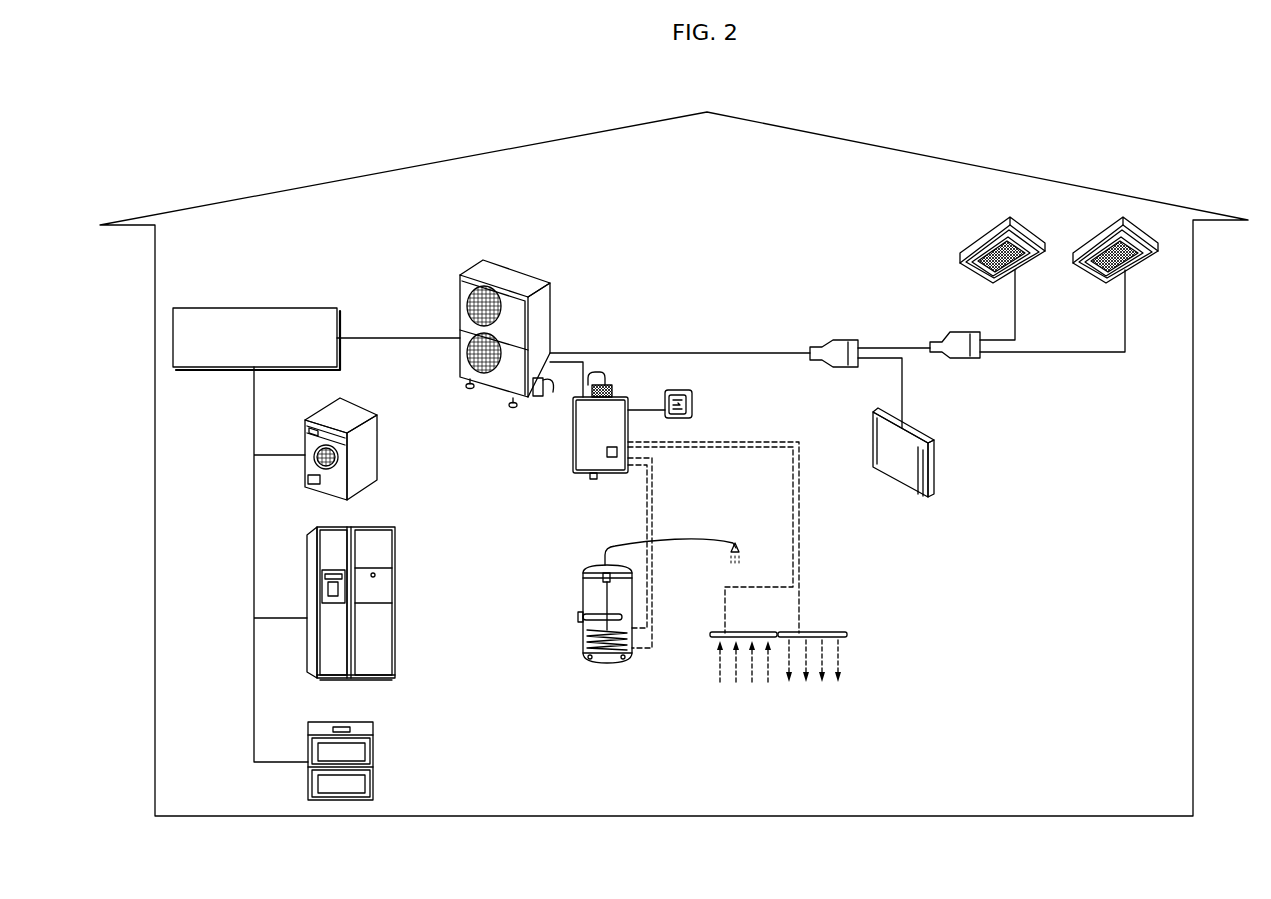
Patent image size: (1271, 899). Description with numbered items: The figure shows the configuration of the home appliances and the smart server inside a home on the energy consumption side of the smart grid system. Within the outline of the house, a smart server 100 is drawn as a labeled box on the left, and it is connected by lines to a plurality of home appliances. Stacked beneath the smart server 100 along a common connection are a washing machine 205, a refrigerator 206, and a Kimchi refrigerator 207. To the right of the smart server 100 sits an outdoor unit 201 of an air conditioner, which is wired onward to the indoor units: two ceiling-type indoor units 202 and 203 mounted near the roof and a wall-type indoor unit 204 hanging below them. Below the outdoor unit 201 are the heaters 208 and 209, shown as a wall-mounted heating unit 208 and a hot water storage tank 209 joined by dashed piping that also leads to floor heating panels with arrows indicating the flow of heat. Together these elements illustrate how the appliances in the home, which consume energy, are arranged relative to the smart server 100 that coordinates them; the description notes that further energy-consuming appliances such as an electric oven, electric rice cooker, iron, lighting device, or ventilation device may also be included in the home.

The smart server 100 is at (308, 308).
The outdoor unit 201 is at (517, 270).
The indoor unit 202 is at (1028, 265).
The indoor unit 203 is at (1140, 265).
The indoor unit 204 is at (934, 468).
The washing machine 205 is at (377, 448).
The refrigerator 206 is at (395, 583).
The Kimchi refrigerator 207 is at (373, 748).
The heater 208 is at (573, 437).
The heater 209 is at (583, 598).